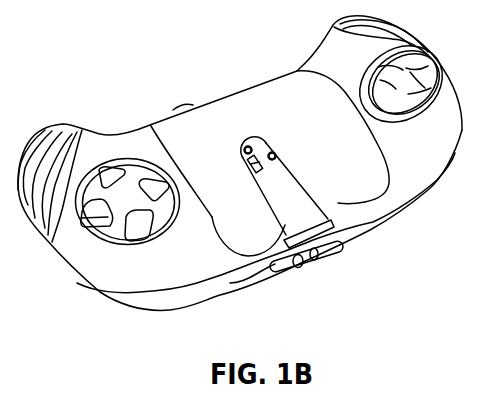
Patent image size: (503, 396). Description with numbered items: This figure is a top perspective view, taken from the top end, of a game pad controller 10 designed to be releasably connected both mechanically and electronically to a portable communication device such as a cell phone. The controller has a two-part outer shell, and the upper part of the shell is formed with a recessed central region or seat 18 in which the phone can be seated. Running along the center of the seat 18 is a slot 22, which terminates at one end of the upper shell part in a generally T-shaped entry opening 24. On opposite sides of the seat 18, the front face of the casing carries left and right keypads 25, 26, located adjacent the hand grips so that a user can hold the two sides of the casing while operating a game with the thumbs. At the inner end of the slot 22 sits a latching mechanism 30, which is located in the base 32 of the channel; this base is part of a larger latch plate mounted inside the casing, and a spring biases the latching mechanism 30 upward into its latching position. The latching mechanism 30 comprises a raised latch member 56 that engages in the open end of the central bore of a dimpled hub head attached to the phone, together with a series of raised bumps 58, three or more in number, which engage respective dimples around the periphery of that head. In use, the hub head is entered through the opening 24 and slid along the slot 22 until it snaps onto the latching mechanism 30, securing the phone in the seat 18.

The game pad controller 10 is at (152, 100).
The recessed central region or seat 18 is at (290, 80).
The slot 22 is at (212, 220).
The T-shaped entry opening 24 is at (322, 231).
The left keypad 25 is at (417, 70).
The right keypad 26 is at (123, 205).
The latching mechanism 30 is at (256, 146).
The base of the channel 32 is at (283, 181).
The raised latch member 56 is at (247, 165).
The raised bumps 58 is at (247, 138).